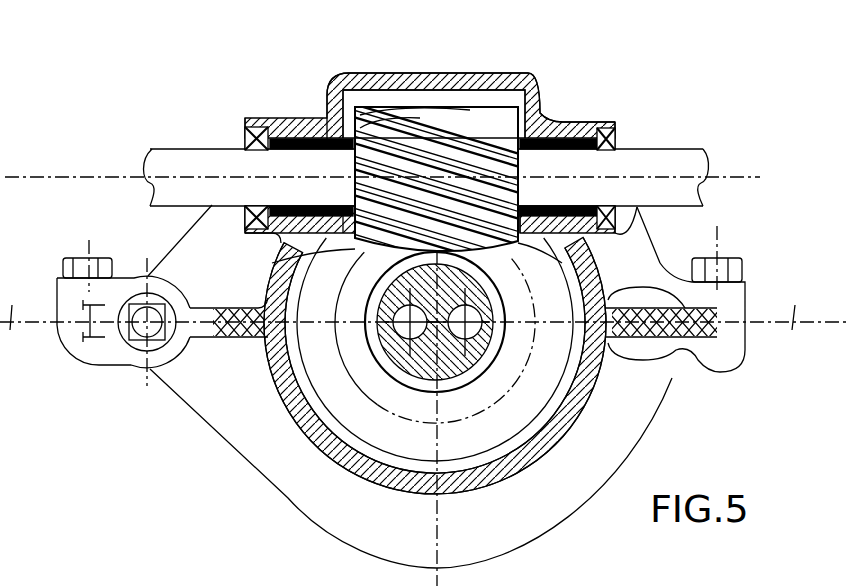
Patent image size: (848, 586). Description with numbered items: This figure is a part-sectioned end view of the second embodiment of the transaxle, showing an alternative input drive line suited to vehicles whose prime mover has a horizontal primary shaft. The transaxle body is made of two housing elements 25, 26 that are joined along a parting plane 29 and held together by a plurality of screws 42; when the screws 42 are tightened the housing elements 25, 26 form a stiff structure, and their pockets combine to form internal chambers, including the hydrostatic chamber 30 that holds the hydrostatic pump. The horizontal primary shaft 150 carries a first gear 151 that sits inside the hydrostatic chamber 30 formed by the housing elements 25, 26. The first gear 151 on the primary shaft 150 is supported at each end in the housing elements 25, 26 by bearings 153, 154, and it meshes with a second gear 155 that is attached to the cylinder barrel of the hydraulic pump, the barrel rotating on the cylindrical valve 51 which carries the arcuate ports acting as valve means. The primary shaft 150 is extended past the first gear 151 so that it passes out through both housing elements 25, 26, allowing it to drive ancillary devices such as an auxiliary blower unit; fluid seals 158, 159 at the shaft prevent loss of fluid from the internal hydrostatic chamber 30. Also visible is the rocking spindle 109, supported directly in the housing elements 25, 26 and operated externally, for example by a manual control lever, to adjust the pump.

The housing element 25 is at (598, 263).
The housing element 26 is at (602, 388).
The parting plane 29 is at (410, 302).
The chamber 30 is at (438, 96).
The screw 42 is at (82, 257).
The cylindrical valve 51 is at (446, 352).
The rocking spindle 109 is at (140, 347).
The primary shaft 150 is at (188, 166).
The first gear 151 is at (470, 133).
The bearing 153 is at (303, 140).
The bearing 154 is at (560, 122).
The second gear 155 is at (282, 268).
The fluid seal 158 is at (244, 138).
The fluid seal 159 is at (617, 135).